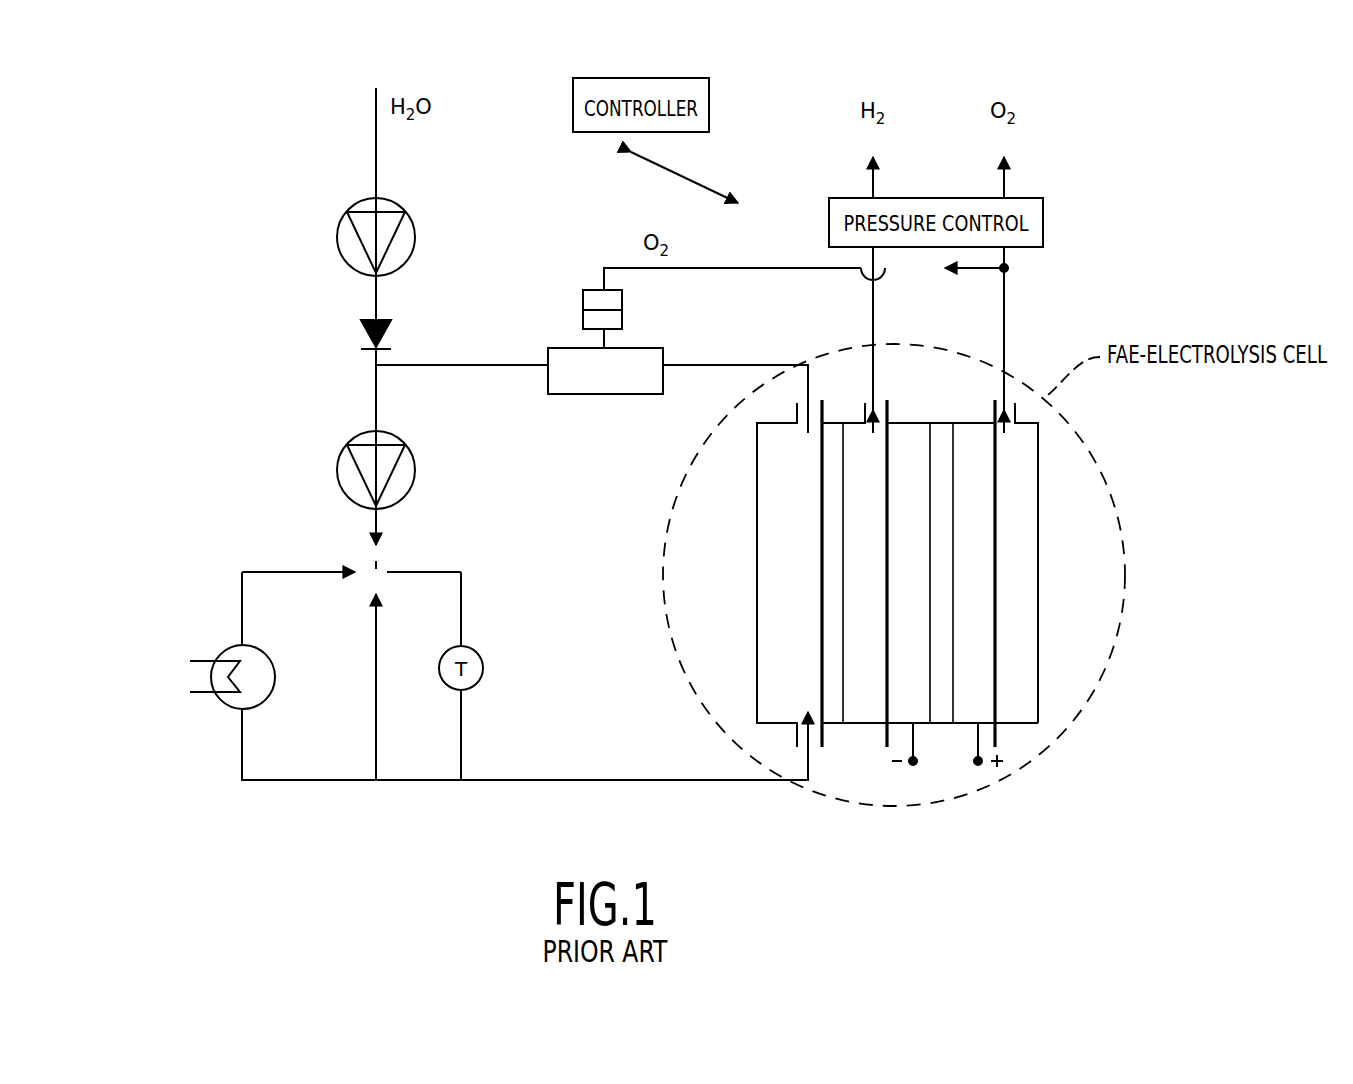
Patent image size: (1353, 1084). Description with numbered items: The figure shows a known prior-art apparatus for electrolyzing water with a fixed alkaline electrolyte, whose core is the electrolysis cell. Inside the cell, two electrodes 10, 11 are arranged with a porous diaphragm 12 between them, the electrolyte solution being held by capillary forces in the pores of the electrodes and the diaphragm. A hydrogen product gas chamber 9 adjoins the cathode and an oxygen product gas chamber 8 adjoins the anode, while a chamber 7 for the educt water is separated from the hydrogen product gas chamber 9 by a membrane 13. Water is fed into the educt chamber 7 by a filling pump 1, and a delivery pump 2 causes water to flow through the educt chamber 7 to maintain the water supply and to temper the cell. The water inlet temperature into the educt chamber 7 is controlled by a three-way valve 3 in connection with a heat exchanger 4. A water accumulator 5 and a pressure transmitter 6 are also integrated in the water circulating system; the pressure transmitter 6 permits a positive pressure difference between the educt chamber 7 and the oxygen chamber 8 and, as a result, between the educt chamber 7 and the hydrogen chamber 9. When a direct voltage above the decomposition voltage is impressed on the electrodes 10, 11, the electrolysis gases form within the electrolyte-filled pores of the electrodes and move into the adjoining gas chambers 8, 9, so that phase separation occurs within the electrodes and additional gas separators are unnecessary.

The filling pump 1 is at (346, 261).
The delivery pump 2 is at (345, 477).
The 3-way valve 3 is at (350, 546).
The heat exchanger 4 is at (228, 703).
The water accumulator 5 is at (548, 385).
The pressure transmitter 6 is at (583, 305).
The educt chamber 7 is at (773, 650).
The oxygen product gas chamber 8 is at (1020, 507).
The hydrogen product gas chamber 9 is at (868, 712).
The electrode 10 is at (912, 452).
The electrode 11 is at (963, 443).
The porous diaphragm 12 is at (945, 708).
The membrane 13 is at (838, 725).